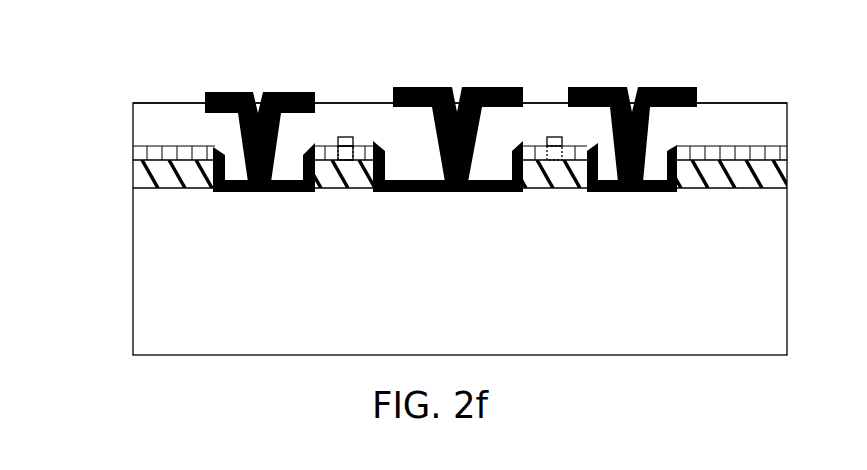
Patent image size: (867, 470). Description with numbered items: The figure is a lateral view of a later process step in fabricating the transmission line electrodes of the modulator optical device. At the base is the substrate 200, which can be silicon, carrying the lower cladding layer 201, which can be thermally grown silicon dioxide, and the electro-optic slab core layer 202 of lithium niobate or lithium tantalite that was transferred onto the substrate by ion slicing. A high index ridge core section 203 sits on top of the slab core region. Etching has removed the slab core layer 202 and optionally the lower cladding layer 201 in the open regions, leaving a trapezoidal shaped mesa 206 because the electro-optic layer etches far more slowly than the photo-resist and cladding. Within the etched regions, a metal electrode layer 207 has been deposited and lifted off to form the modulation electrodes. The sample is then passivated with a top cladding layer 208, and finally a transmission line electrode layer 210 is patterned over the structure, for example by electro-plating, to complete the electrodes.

The substrate 200 is at (155, 302).
The lower cladding layer 201 is at (140, 178).
The electro-optic slab core layer 202 is at (132, 148).
The high index ridge core section 203 is at (547, 138).
The trapezoidal shaped mesa 206 is at (337, 143).
The metal electrode layer 207 is at (245, 192).
The top cladding layer 208 is at (173, 123).
The transmission line electrode layer 210 is at (660, 85).